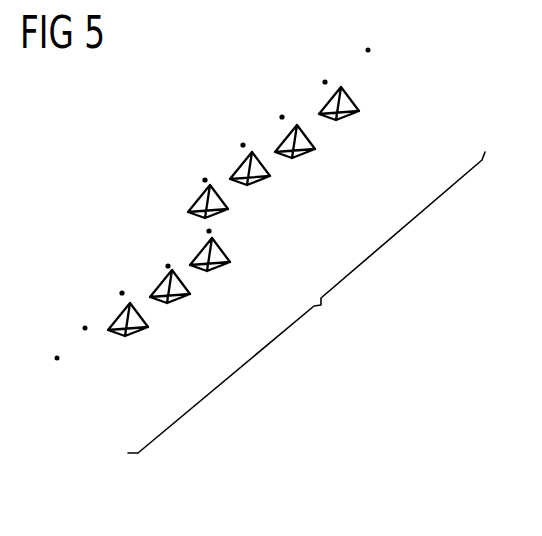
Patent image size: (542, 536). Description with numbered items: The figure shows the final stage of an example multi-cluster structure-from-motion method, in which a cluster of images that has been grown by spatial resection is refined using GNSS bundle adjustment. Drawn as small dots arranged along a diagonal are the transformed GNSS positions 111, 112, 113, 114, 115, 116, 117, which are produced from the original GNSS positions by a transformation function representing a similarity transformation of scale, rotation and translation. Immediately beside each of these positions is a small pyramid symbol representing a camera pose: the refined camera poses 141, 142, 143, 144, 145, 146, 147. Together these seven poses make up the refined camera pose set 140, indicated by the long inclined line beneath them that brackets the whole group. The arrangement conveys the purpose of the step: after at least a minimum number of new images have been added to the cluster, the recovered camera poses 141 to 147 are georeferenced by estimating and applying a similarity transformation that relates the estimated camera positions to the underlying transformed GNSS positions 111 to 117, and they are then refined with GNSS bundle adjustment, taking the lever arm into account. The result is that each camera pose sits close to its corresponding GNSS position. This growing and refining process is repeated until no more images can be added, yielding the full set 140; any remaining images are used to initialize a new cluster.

The transformed GNSS position 111 is at (100, 281).
The transformed GNSS position 112 is at (152, 254).
The transformed GNSS position 113 is at (187, 220).
The transformed GNSS position 114 is at (191, 166).
The transformed GNSS position 115 is at (229, 134).
The transformed GNSS position 116 is at (267, 103).
The transformed GNSS position 117 is at (304, 66).
The refined camera pose set 140 is at (306, 302).
The refined camera pose 141 is at (112, 357).
The refined camera pose 142 is at (163, 322).
The refined camera pose 143 is at (207, 291).
The refined camera pose 144 is at (240, 216).
The refined camera pose 145 is at (282, 188).
The refined camera pose 146 is at (322, 163).
The refined camera pose 147 is at (366, 123).